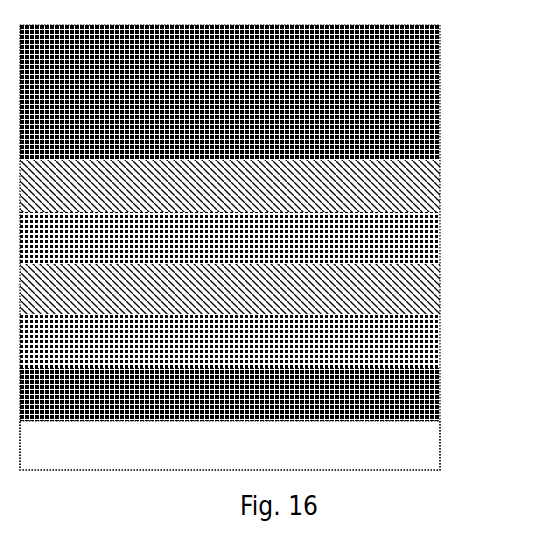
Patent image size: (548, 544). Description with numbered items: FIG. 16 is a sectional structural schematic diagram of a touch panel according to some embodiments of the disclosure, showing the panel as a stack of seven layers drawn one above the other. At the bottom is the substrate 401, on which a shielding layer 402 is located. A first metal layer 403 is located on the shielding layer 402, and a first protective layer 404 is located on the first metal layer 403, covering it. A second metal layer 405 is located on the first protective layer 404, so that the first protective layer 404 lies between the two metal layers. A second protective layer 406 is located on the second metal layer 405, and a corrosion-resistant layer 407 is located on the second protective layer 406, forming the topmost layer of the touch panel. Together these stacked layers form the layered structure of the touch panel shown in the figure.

The substrate 401 is at (417, 450).
The shielding layer 402 is at (417, 395).
The first metal layer 403 is at (417, 339).
The first protective layer 404 is at (417, 292).
The second metal layer 405 is at (417, 239).
The second protective layer 406 is at (417, 193).
The corrosion-resistant layer 407 is at (417, 107).